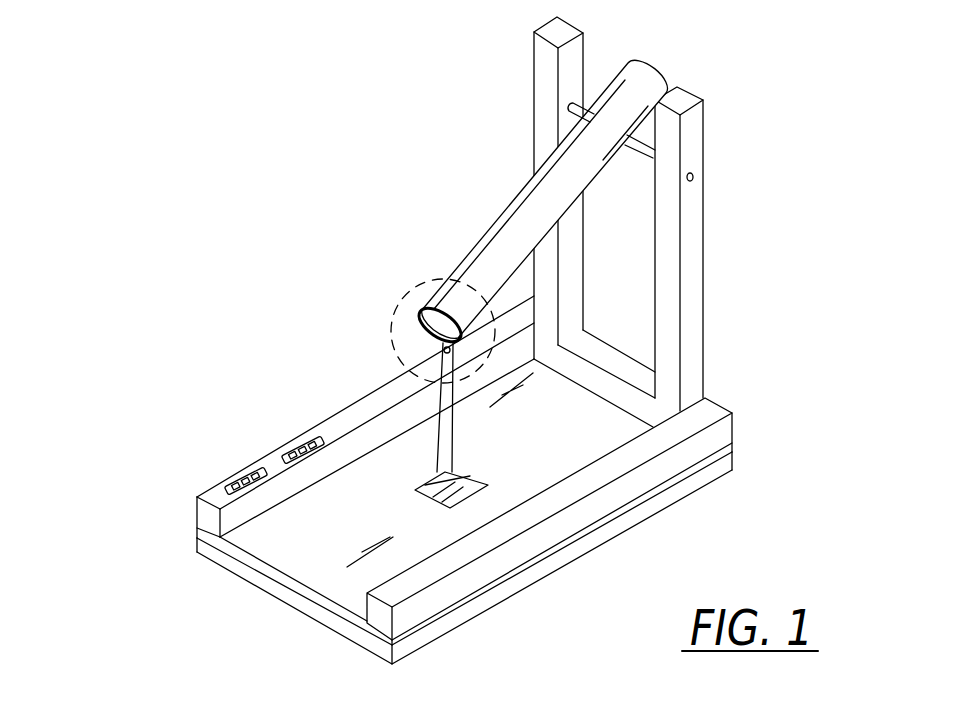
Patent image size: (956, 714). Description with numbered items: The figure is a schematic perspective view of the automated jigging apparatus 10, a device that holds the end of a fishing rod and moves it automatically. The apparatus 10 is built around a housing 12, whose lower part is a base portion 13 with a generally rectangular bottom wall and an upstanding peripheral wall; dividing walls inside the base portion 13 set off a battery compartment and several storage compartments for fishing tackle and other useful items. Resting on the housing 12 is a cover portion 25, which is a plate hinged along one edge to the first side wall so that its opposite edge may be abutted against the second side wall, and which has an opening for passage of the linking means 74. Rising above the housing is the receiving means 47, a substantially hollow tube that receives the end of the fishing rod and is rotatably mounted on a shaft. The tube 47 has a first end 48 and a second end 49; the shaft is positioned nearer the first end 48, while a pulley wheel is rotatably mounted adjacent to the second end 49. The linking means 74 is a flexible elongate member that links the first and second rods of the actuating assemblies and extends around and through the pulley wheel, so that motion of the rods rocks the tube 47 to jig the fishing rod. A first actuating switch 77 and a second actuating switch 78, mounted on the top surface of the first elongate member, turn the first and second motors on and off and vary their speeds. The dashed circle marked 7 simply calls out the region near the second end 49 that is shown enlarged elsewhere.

The automated jigging apparatus 10 is at (297, 202).
The housing 12 is at (197, 542).
The base portion 13 is at (260, 590).
The cover portion 25 is at (732, 443).
The receiving means 47 is at (489, 228).
The first end 48 is at (650, 68).
The second end 49 is at (424, 315).
The linking means 74 is at (437, 430).
The first actuating switch 77 is at (238, 487).
The second actuating switch 78 is at (310, 445).
The detail view circle 7 is at (400, 300).